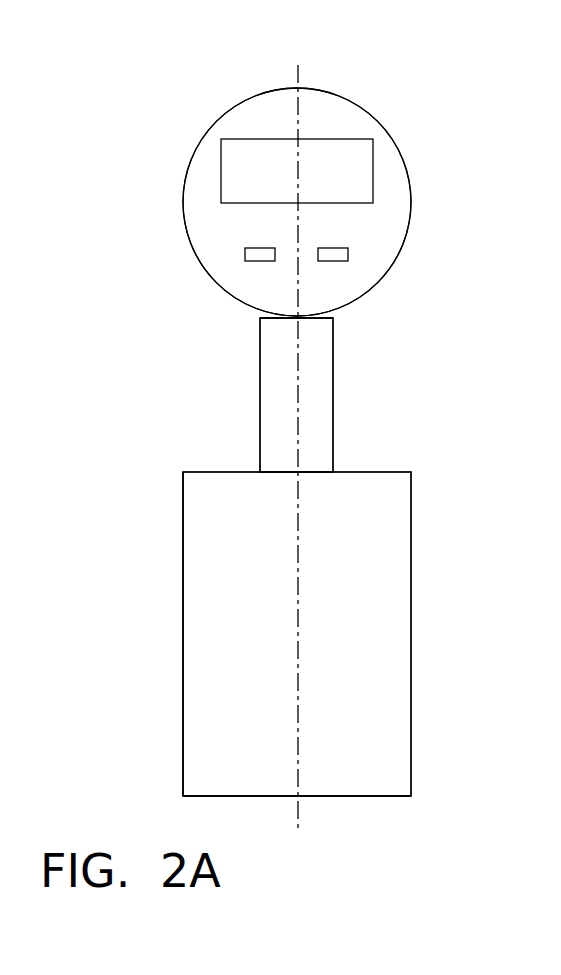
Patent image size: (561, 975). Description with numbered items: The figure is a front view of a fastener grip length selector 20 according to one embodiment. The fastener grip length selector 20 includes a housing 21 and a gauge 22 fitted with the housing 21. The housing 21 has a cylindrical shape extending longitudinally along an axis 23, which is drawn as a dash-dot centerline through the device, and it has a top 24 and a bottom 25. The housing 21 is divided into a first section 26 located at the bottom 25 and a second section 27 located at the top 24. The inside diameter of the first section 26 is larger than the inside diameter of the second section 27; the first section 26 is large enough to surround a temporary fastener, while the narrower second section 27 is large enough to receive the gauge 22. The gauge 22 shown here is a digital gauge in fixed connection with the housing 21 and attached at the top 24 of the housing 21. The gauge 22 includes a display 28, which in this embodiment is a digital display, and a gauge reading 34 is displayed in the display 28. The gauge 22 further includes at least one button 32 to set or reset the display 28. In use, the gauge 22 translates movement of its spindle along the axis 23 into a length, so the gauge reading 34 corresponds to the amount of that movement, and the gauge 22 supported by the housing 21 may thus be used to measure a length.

The fastener grip length selector 20 is at (172, 100).
The housing 21 is at (368, 608).
The gauge 22 is at (383, 237).
The axis 23 is at (300, 75).
The top 24 is at (266, 318).
The bottom 25 is at (332, 798).
The first section 26 is at (218, 610).
The second section 27 is at (282, 441).
The display 28 is at (364, 152).
The button 32 is at (265, 263).
The gauge reading 34 is at (226, 172).